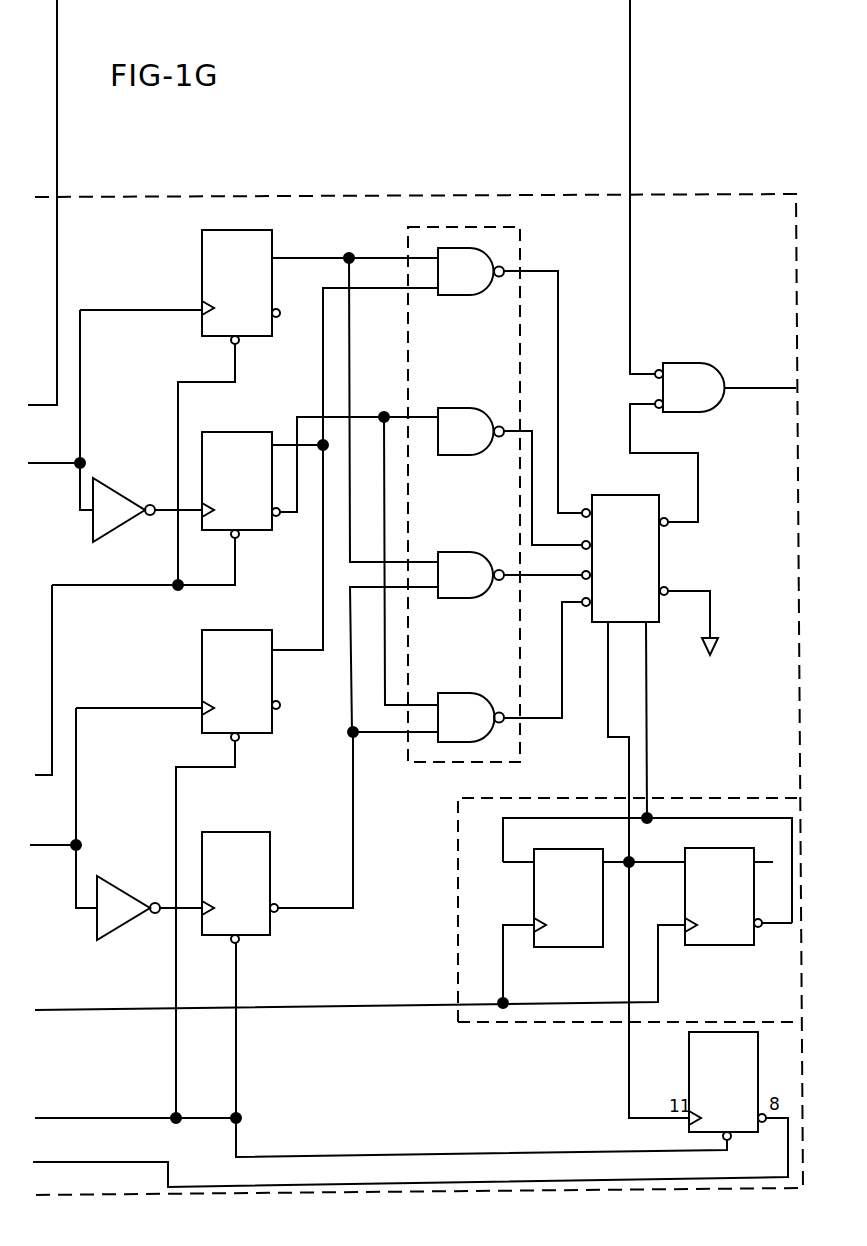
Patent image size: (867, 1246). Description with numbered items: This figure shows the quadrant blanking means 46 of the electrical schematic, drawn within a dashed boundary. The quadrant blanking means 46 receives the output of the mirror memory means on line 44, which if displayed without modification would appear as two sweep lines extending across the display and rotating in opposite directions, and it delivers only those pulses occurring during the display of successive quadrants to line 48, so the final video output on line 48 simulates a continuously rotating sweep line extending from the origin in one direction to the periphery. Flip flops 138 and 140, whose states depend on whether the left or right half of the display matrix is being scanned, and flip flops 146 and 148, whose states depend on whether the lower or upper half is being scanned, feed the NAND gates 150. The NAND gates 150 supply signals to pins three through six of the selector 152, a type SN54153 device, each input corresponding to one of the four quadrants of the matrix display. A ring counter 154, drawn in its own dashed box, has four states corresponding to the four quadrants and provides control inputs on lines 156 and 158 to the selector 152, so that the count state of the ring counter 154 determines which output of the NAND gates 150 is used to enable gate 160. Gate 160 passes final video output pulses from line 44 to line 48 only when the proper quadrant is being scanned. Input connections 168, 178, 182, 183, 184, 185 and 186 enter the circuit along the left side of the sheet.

The line 44 is at (630, 146).
The quadrant blanking means 46 is at (268, 193).
The line 48 is at (770, 390).
The flip flop 138 is at (254, 230).
The flip flop 140 is at (216, 432).
The flip flop 146 is at (212, 630).
The flip flop 148 is at (228, 832).
The NAND gates 150 is at (468, 228).
The selector 152 is at (640, 495).
The ring counter 154 is at (458, 896).
The line 156 is at (606, 694).
The line 158 is at (648, 720).
The gate 160 is at (712, 362).
The input line 168 is at (108, 1162).
The input line 178 is at (100, 1118).
The input line 182 is at (57, 1010).
The input line 183 is at (75, 849).
The input line 184 is at (52, 690).
The input line 185 is at (39, 466).
The input line 186 is at (57, 292).